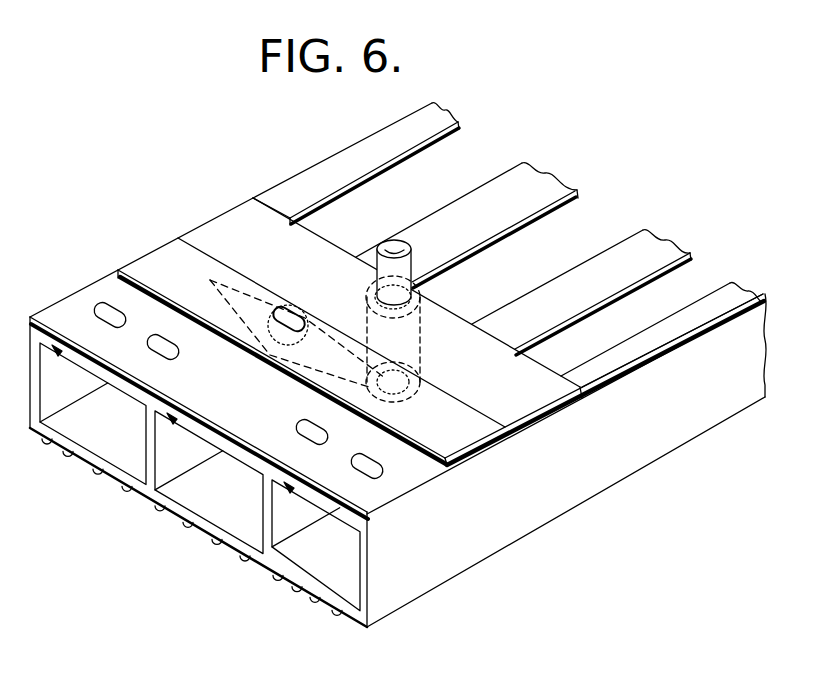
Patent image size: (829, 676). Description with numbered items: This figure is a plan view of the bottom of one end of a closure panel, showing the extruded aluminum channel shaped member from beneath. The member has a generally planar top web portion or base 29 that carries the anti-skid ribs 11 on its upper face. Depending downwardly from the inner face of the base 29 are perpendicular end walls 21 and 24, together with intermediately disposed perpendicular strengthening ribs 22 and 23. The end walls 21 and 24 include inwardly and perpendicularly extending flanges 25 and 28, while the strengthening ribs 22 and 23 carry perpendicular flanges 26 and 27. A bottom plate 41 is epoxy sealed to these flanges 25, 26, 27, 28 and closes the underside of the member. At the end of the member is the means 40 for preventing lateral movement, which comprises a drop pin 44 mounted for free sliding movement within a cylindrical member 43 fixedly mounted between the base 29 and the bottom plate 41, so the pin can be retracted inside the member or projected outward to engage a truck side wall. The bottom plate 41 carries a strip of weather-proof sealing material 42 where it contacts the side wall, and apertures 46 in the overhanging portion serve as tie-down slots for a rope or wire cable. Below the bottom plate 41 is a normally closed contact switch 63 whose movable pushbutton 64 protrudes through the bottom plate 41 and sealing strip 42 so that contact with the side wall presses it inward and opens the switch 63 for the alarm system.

The anti-skid ribs 11 is at (68, 456).
The end wall 21 is at (755, 333).
The strengthening rib 22 is at (668, 318).
The strengthening rib 23 is at (600, 260).
The end wall 24 is at (450, 203).
The flange 25 is at (756, 292).
The flange 26 is at (660, 237).
The flange 27 is at (544, 172).
The flange 28 is at (446, 114).
The planar top web portion or base 29 is at (140, 465).
The means for preventing lateral movement 40 is at (149, 245).
The bottom plate 41 is at (488, 343).
The strip of weather-proof sealing material 42 is at (502, 425).
The cylindrical member 43 is at (407, 353).
The drop pin 44 is at (378, 281).
The apertures 46 is at (113, 329).
The contact switch 63 is at (226, 294).
The movable pushbutton 64 is at (288, 306).